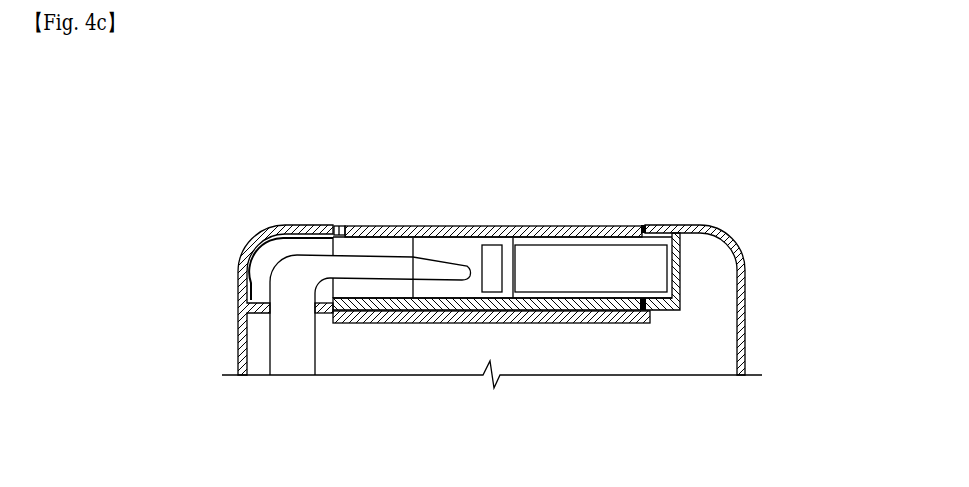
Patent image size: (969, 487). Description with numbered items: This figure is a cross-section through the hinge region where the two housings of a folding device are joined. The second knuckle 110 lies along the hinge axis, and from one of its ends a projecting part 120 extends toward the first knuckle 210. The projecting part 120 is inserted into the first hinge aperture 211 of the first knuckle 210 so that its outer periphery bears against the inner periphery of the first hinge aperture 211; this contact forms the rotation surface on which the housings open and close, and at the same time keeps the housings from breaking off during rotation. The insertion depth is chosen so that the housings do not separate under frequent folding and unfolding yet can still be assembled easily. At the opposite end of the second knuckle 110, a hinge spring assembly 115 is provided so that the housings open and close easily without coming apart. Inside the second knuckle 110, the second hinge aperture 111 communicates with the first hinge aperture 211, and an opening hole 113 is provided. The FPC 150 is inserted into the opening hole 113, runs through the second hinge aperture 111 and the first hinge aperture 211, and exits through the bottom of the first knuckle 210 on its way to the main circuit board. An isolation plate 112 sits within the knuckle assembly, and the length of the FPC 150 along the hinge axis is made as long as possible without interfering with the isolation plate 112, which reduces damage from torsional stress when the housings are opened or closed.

The second knuckle 110 is at (382, 226).
The second hinge aperture 111 is at (405, 243).
The isolation plate 112 is at (519, 245).
The opening hole 113 is at (497, 262).
The hinge spring assembly 115 is at (622, 258).
The projecting part 120 is at (334, 226).
The FPC 150 is at (290, 376).
The first knuckle 210 is at (261, 236).
The first hinge aperture 211 is at (260, 273).